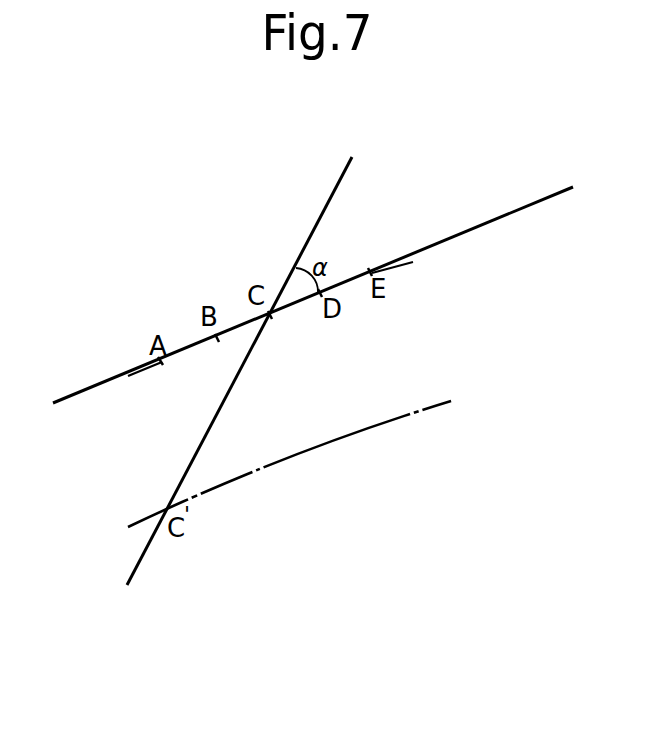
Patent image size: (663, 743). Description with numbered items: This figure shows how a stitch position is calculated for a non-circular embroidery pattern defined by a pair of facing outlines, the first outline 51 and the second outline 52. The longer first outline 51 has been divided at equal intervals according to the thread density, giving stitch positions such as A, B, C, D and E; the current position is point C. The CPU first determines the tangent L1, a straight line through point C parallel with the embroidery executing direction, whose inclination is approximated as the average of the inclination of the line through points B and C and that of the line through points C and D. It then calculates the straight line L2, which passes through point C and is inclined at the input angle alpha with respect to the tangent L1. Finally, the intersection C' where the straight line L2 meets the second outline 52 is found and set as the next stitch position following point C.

The first outline 51 is at (158, 365).
The second outline 52 is at (290, 459).
The tangent L1 is at (520, 210).
The straight line L2 is at (333, 191).